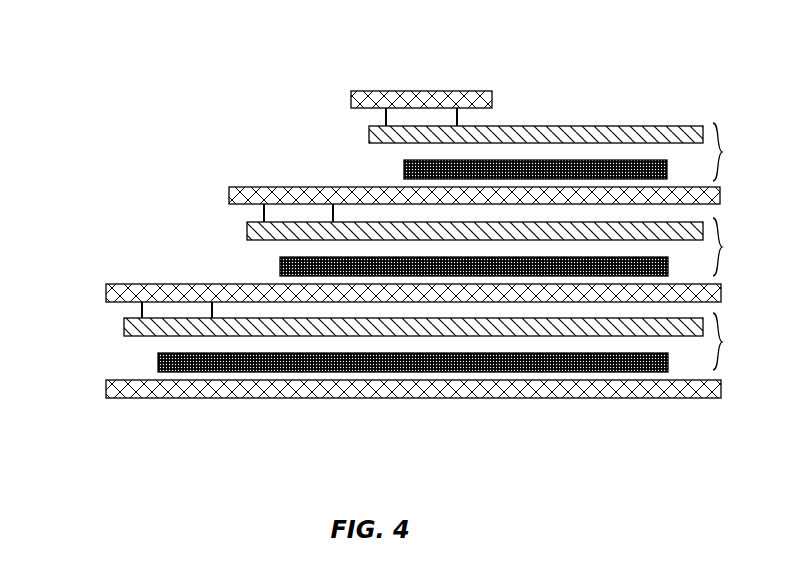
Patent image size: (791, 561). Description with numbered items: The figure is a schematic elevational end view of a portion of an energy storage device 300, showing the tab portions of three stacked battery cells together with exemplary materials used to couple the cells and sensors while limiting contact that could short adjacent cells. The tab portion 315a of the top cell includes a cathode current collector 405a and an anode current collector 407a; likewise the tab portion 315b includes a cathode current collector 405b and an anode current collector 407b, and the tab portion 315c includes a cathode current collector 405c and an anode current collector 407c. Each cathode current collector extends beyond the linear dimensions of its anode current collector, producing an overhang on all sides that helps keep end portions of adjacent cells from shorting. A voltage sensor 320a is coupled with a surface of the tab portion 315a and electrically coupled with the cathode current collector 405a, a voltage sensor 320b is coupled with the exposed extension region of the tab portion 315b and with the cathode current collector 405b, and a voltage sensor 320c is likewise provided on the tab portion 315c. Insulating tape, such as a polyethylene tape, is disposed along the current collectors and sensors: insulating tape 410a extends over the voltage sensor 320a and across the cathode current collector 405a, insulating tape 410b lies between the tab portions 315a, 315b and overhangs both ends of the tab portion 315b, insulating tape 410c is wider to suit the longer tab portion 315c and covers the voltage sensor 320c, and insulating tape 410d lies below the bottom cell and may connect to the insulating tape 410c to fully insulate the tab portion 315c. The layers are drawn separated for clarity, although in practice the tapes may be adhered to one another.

The energy storage device 300 is at (88, 87).
The insulating tape 410a is at (474, 91).
The insulating tape 410b is at (308, 187).
The insulating tape 410c is at (170, 283).
The insulating tape 410d is at (168, 398).
The voltage sensor 320a is at (385, 117).
The voltage sensor 320b is at (263, 216).
The voltage sensor 320c is at (140, 309).
The cathode current collector 405a is at (588, 124).
The cathode current collector 405b is at (247, 236).
The cathode current collector 405c is at (123, 334).
The anode current collector 407a is at (403, 173).
The anode current collector 407b is at (280, 272).
The anode current collector 407c is at (157, 369).
The tab portion 315a is at (741, 152).
The tab portion 315b is at (741, 247).
The tab portion 315c is at (741, 341).